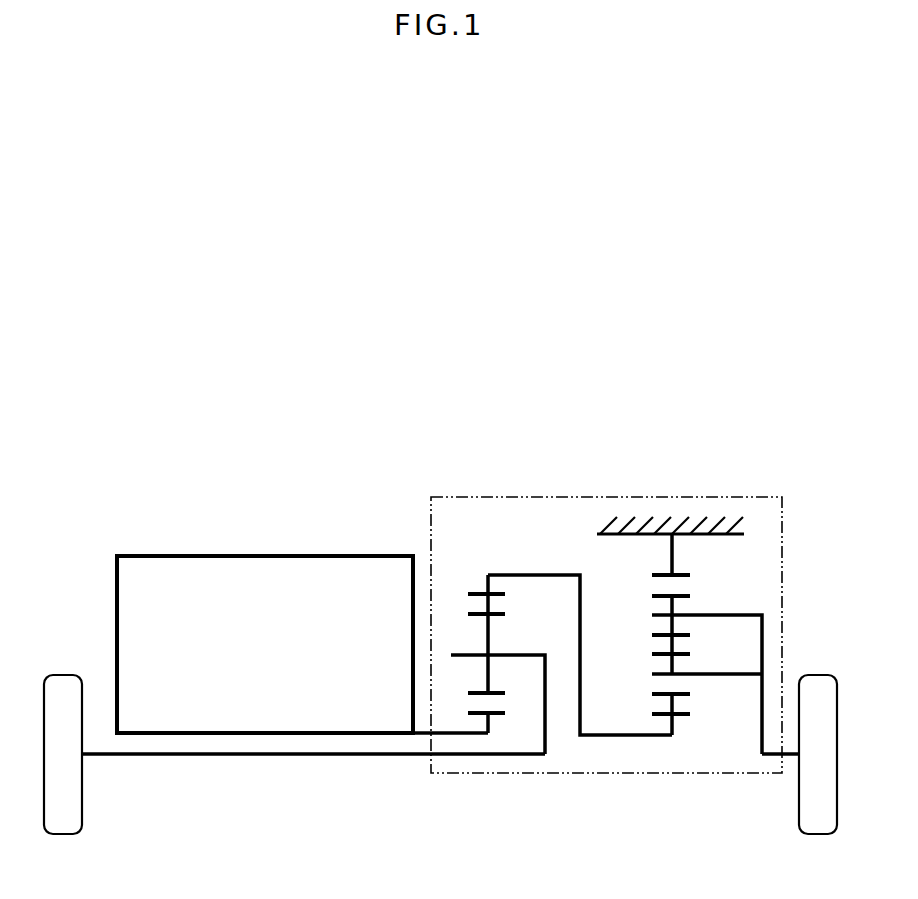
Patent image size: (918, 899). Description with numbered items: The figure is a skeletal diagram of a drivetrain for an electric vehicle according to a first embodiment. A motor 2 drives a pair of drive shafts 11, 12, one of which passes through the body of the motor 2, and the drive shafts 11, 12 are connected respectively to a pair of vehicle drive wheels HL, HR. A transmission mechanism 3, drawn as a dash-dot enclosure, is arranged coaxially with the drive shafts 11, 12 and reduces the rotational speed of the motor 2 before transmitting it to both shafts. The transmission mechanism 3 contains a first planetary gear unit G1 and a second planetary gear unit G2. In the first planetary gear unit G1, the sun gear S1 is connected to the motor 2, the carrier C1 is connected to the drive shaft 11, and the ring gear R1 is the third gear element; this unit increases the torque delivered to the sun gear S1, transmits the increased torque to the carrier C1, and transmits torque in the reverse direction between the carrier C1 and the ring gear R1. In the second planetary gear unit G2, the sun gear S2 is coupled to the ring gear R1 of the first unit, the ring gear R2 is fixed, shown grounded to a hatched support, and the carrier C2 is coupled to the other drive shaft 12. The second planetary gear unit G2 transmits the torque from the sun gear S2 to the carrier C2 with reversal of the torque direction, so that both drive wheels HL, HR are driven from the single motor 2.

The motor 2 is at (264, 556).
The transmission mechanism 3 is at (503, 497).
The drive shaft 11 is at (303, 756).
The drive shaft 12 is at (775, 755).
The drive wheel HL is at (62, 675).
The drive wheel HR is at (819, 675).
The first planetary gear unit G1 is at (542, 640).
The second planetary gear unit G2 is at (677, 635).
The ring gear R1 is at (480, 593).
The ring gear R2 is at (690, 574).
The carrier C1 is at (528, 655).
The carrier C2 is at (757, 634).
The sun gear S1 is at (490, 716).
The sun gear S2 is at (677, 717).